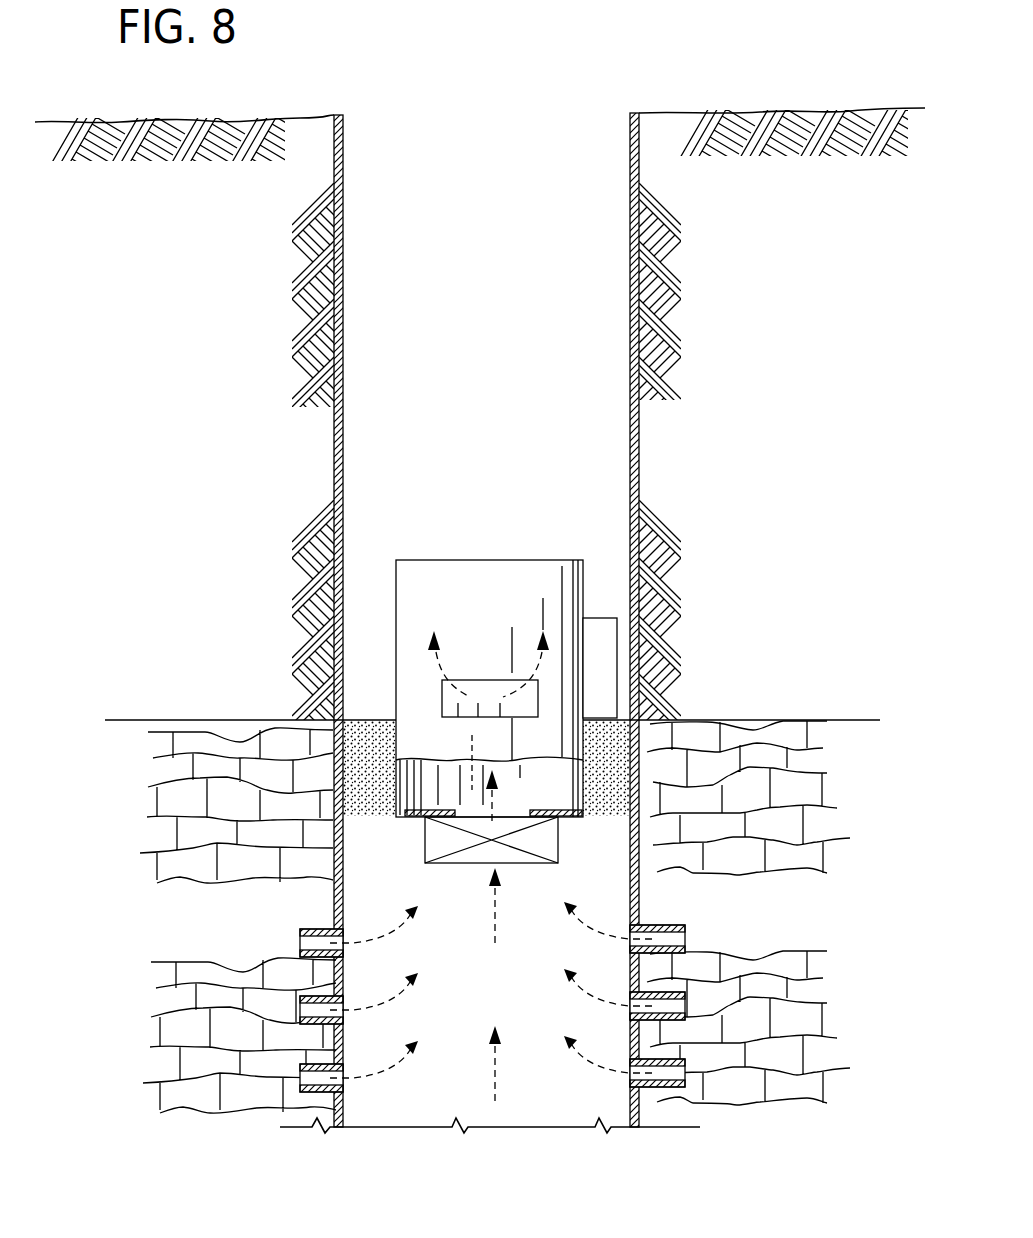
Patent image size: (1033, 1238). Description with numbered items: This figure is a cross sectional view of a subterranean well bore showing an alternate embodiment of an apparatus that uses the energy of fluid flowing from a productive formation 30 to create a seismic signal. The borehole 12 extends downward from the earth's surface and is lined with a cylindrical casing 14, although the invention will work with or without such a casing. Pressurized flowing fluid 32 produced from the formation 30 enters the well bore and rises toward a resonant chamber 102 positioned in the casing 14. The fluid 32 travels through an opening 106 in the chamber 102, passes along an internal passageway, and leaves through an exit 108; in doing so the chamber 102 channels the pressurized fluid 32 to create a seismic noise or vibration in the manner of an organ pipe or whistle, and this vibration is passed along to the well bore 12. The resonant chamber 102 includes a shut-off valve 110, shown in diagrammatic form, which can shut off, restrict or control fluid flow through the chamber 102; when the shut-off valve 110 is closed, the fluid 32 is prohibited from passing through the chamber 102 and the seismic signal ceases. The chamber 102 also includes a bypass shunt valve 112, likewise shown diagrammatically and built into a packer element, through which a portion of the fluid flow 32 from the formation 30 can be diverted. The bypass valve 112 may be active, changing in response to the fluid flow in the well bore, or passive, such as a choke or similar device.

The borehole 12 is at (630, 317).
The cylindrical casing 14 is at (639, 434).
The productive formation 30 is at (750, 1103).
The flowing fluid 32 is at (497, 1053).
The resonant chamber 102 is at (496, 560).
The opening 106 is at (503, 795).
The exit 108 is at (500, 695).
The shut-off valve 110 is at (505, 866).
The bypass shunt valve 112 is at (607, 663).